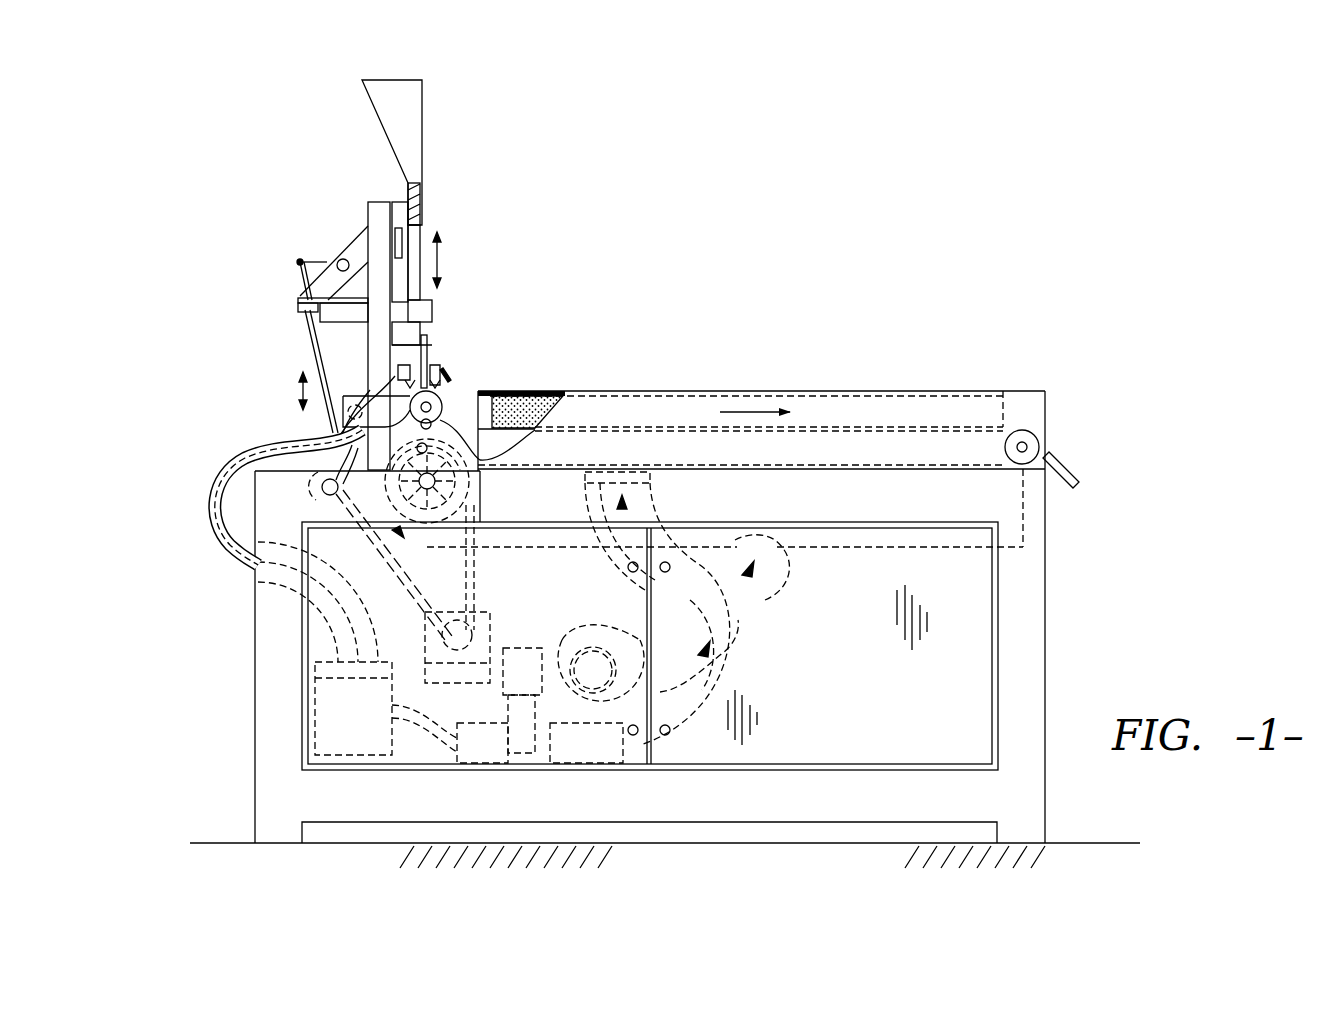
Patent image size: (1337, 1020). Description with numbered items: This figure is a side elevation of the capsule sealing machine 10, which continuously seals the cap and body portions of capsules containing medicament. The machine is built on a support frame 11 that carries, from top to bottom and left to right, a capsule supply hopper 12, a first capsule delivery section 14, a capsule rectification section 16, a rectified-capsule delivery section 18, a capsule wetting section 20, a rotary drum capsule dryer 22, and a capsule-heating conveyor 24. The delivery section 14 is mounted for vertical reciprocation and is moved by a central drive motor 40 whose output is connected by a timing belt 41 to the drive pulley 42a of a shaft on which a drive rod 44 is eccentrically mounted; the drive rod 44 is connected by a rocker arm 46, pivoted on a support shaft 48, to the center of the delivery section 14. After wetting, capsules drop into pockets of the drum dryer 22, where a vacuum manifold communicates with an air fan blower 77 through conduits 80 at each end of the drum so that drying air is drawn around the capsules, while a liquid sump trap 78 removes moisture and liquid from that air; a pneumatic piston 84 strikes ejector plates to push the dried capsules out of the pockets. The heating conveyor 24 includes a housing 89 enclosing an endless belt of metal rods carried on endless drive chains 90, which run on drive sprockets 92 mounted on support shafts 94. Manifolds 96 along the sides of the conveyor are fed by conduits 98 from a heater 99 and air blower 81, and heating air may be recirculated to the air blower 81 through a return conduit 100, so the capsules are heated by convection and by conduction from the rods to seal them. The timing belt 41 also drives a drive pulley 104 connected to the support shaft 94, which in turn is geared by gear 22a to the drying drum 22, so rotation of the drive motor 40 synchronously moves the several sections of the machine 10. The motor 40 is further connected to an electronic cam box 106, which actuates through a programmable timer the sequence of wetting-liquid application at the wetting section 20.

The capsule sealing machine 10 is at (555, 328).
The support frame 11 is at (392, 204).
The capsule supply hopper 12 is at (422, 137).
The first capsule delivery section 14 is at (437, 250).
The capsule rectification section 16 is at (432, 326).
The rectified-capsule delivery section 18 is at (434, 352).
The capsule wetting section 20 is at (446, 382).
The rotary drum capsule dryer 22 is at (392, 397).
The gear 22a is at (392, 390).
The capsule-heating conveyor 24 is at (745, 388).
The central drive motor 40 is at (480, 642).
The timing belt 41 is at (470, 597).
The drive pulley 42a is at (324, 482).
The drive rod 44 is at (308, 366).
The rocker arm 46 is at (320, 258).
The support shaft 48 is at (348, 258).
The air fan blower 77 is at (472, 763).
The liquid sump trap 78 is at (354, 755).
The conduits 80 is at (238, 476).
The air blower 81 is at (562, 660).
The pneumatic piston 84 is at (446, 423).
The housing 89 is at (1012, 400).
The endless drive chains 90 is at (890, 462).
The drive sprockets 92 is at (1040, 447).
The support shafts 94 is at (1033, 440).
The manifolds 96 is at (532, 398).
The conduits 98 is at (735, 668).
The heater 99 is at (518, 655).
The return conduit 100 is at (765, 593).
The drive pulley 104 is at (462, 540).
The electronic cam box 106 is at (448, 682).